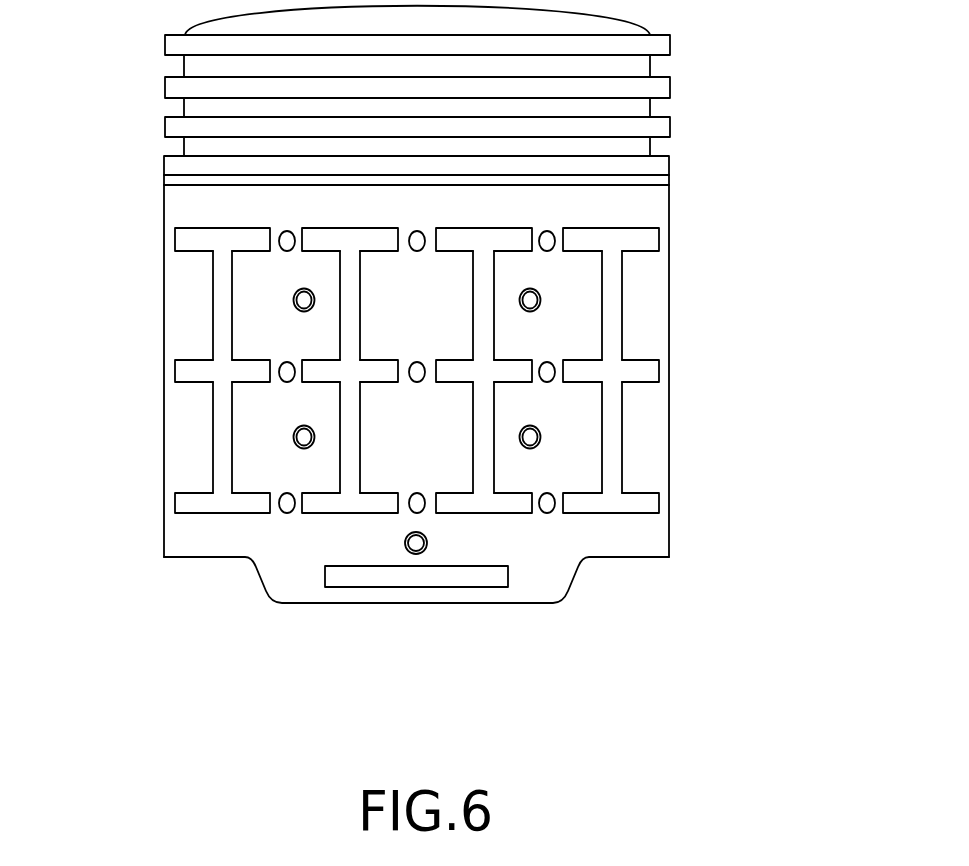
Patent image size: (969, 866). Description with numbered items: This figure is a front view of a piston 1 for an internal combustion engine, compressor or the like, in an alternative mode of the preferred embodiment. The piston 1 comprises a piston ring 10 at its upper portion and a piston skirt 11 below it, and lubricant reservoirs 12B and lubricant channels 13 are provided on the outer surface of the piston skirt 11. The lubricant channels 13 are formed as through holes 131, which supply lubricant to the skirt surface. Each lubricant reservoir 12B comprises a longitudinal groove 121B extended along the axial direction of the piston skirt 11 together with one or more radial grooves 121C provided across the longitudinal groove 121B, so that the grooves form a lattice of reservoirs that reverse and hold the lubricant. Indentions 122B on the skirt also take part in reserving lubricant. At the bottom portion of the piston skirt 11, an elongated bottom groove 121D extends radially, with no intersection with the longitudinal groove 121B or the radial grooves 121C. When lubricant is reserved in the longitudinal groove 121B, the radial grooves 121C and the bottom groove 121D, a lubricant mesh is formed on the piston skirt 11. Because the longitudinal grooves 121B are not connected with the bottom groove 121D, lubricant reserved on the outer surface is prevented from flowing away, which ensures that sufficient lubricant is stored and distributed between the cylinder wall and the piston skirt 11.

The piston 1 is at (447, 382).
The piston ring 10 is at (137, 45).
The piston skirt 11 is at (178, 407).
The lubricant reservoir 12B is at (650, 310).
The lubricant channel 13 is at (545, 287).
The through hole 131 is at (538, 305).
The longitudinal groove 121B is at (220, 315).
The radial groove 121C is at (215, 240).
The elongated bottom groove 121D is at (422, 580).
The indention 122B is at (280, 507).